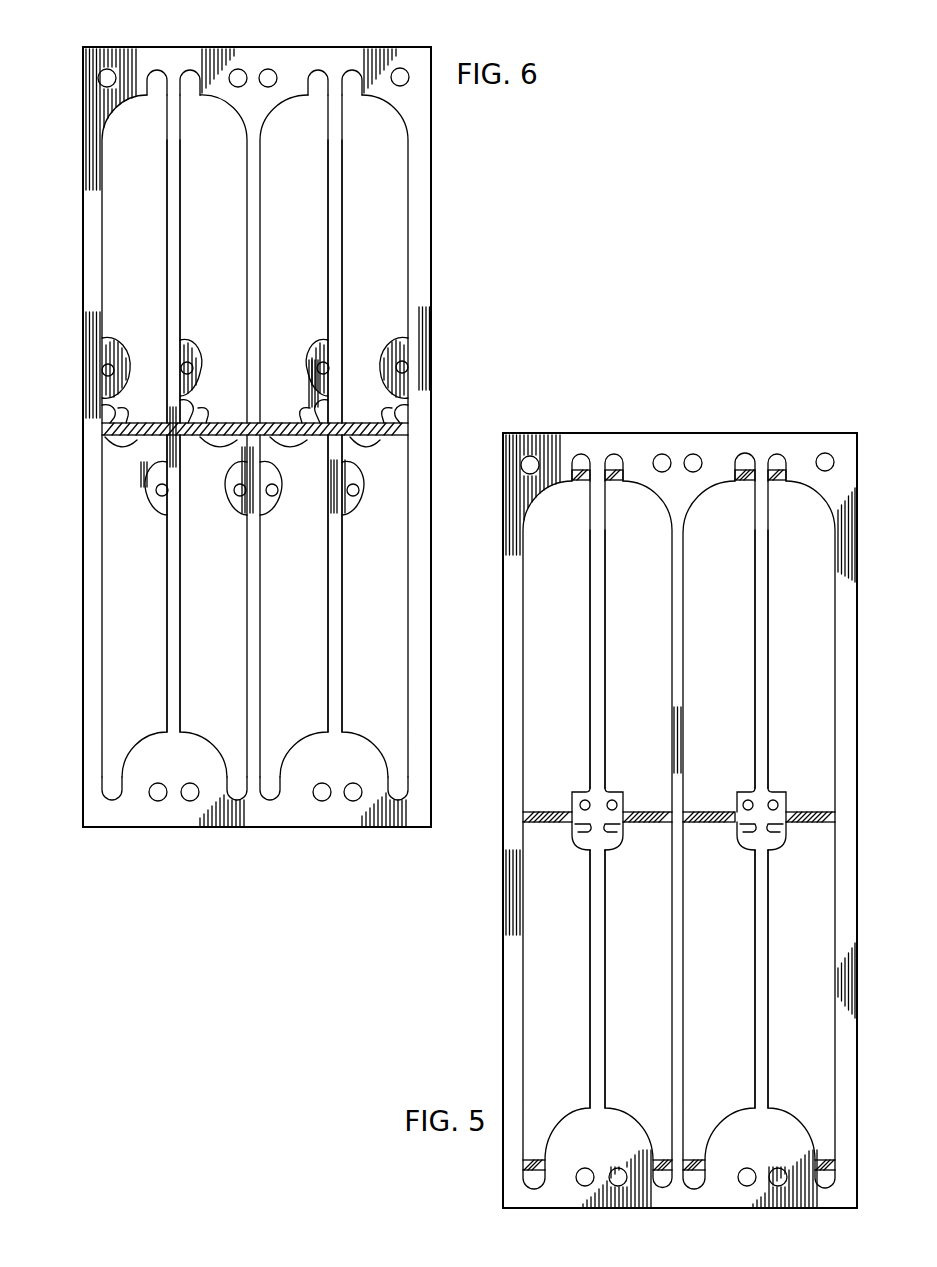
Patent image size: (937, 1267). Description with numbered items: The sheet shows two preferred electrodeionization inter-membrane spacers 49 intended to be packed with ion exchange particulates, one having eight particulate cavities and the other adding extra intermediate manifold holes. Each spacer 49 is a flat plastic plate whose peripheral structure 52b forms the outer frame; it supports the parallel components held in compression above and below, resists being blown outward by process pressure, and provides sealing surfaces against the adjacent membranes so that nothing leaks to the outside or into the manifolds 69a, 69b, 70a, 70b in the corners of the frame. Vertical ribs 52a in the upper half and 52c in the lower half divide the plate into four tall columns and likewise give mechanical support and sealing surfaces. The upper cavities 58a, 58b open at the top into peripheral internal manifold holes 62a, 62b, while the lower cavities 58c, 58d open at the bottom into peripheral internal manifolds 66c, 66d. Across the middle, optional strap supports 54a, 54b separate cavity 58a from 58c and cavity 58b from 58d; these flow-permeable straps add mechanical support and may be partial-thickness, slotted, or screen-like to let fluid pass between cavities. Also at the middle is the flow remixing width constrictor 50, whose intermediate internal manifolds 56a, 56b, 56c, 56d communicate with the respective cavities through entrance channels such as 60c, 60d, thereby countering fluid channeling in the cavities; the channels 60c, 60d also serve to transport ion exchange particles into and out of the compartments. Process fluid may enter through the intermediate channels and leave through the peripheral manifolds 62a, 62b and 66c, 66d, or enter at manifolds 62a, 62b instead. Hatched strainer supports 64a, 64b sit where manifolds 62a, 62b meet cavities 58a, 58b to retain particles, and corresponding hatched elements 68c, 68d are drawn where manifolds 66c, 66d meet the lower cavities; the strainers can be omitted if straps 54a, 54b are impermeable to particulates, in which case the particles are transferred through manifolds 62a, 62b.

In FIG. 6, the inter-membrane spacer 49 is at (436, 190).
In FIG. 5, the inter-membrane spacer 49 is at (860, 703).
In FIG. 6, the flow remixing width constrictor 50 is at (110, 362).
In FIG. 5, the flow remixing width constrictor 50 is at (614, 800).
In FIG. 6, the vertical rib 52a is at (177, 257).
In FIG. 5, the vertical rib 52a is at (600, 657).
In FIG. 6, the peripheral structure 52b is at (92, 287).
In FIG. 5, the peripheral structure 52b is at (512, 612).
In FIG. 6, the vertical rib 52c is at (178, 597).
In FIG. 5, the vertical rib 52c is at (600, 1063).
In FIG. 6, the strap support 54a is at (160, 452).
In FIG. 5, the strap support 54a is at (548, 812).
In FIG. 5, the strap support 54b is at (630, 812).
In FIG. 6, the intermediate internal manifold 56a is at (102, 364).
In FIG. 5, the intermediate internal manifold 56a is at (586, 788).
In FIG. 6, the intermediate internal manifold 56b is at (192, 368).
In FIG. 5, the intermediate internal manifold 56b is at (610, 788).
In FIG. 6, the intermediate internal manifold 56c is at (103, 402).
In FIG. 5, the intermediate internal manifold 56c is at (578, 845).
In FIG. 6, the intermediate internal manifold 56d is at (196, 402).
In FIG. 5, the intermediate internal manifold 56d is at (618, 845).
In FIG. 6, the cavity 58a is at (255, 259).
In FIG. 5, the cavity 58a is at (639, 646).
In FIG. 6, the cavity 58b is at (254, 259).
In FIG. 5, the cavity 58b is at (720, 646).
In FIG. 6, the cavity 58c is at (255, 606).
In FIG. 5, the cavity 58c is at (639, 991).
In FIG. 6, the cavity 58d is at (254, 606).
In FIG. 5, the cavity 58d is at (720, 991).
In FIG. 6, the entrance channel 60c is at (120, 418).
In FIG. 5, the entrance channel 60c is at (574, 830).
In FIG. 6, the entrance channel 60d is at (200, 418).
In FIG. 5, the entrance channel 60d is at (622, 830).
In FIG. 6, the peripheral internal manifold hole 62a is at (157, 68).
In FIG. 5, the peripheral internal manifold hole 62a is at (581, 453).
In FIG. 6, the peripheral internal manifold hole 62b is at (318, 68).
In FIG. 5, the peripheral internal manifold hole 62b is at (614, 453).
In FIG. 5, the strainer support 64a is at (578, 482).
In FIG. 5, the strainer support 64b is at (616, 482).
In FIG. 6, the peripheral internal manifold 66c is at (113, 805).
In FIG. 5, the peripheral internal manifold 66c is at (525, 1195).
In FIG. 6, the peripheral internal manifold 66d is at (237, 805).
In FIG. 5, the peripheral internal manifold 66d is at (660, 1190).
In FIG. 5, the lower hatched tab 68c is at (536, 1162).
In FIG. 5, the lower hatched tab 68d is at (662, 1162).
In FIG. 6, the manifold 69a is at (98, 77).
In FIG. 5, the manifold 69a is at (522, 462).
In FIG. 6, the manifold 69b is at (234, 70).
In FIG. 5, the manifold 69b is at (662, 453).
In FIG. 6, the manifold 70a is at (157, 802).
In FIG. 5, the manifold 70a is at (583, 1180).
In FIG. 6, the manifold 70b is at (190, 802).
In FIG. 5, the manifold 70b is at (616, 1187).